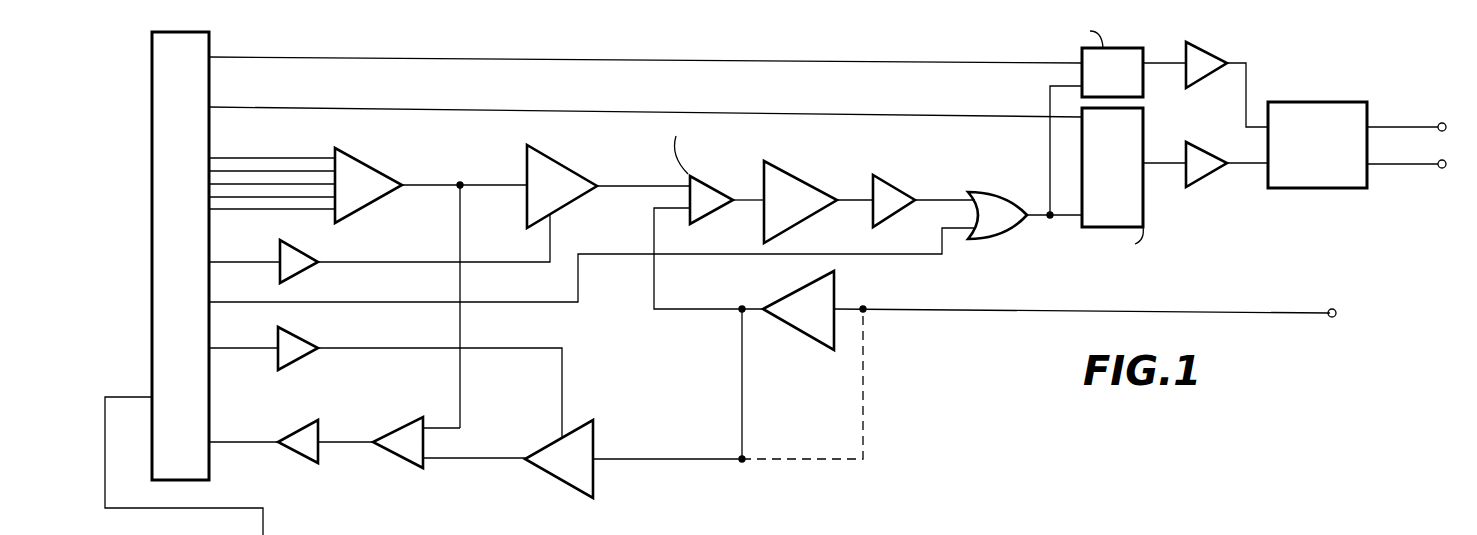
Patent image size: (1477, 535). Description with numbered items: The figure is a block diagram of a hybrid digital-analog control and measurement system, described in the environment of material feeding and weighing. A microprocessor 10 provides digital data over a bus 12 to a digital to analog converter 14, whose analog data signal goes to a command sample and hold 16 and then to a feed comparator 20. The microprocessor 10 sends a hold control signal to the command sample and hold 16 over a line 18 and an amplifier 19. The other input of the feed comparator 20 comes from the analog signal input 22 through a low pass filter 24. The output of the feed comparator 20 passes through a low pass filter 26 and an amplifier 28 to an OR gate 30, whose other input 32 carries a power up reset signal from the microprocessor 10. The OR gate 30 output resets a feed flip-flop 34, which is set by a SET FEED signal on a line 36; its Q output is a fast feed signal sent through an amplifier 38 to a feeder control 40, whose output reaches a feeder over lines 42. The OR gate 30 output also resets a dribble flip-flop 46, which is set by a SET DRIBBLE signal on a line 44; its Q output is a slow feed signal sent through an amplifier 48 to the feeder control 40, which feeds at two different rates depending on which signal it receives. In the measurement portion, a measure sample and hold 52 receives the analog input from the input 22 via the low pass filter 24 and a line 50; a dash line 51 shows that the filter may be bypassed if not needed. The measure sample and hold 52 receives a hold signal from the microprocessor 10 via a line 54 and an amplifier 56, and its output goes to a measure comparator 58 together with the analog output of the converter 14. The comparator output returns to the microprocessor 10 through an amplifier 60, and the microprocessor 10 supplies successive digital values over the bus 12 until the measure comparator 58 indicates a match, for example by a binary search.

The microprocessor 10 is at (152, 185).
The bus 12 is at (322, 160).
The digital to analog converter 14 is at (373, 167).
The command sample and hold 16 is at (571, 202).
The line 18 is at (217, 262).
The amplifier 19 is at (305, 253).
The feed comparator 20 is at (705, 222).
The analog signal input 22 is at (1329, 308).
The low pass filter 24 is at (836, 283).
The low pass filter 26 is at (816, 178).
The amplifier 28 is at (890, 178).
The OR gate 30 is at (985, 192).
The input 32 is at (398, 302).
The feed flip-flop 34 is at (1143, 210).
The line 36 is at (438, 108).
The amplifier 38 is at (1205, 180).
The feeder control 40 is at (1296, 190).
The lines 42 is at (1388, 125).
The line 44 is at (478, 60).
The dribble flip-flop 46 is at (1143, 85).
The amplifier 48 is at (1214, 52).
The line 50 is at (745, 393).
The dash line 51 is at (866, 393).
The measure sample and hold 52 is at (595, 437).
The line 54 is at (256, 352).
The amplifier 56 is at (305, 340).
The measure comparator 58 is at (395, 466).
The amplifier 60 is at (308, 462).